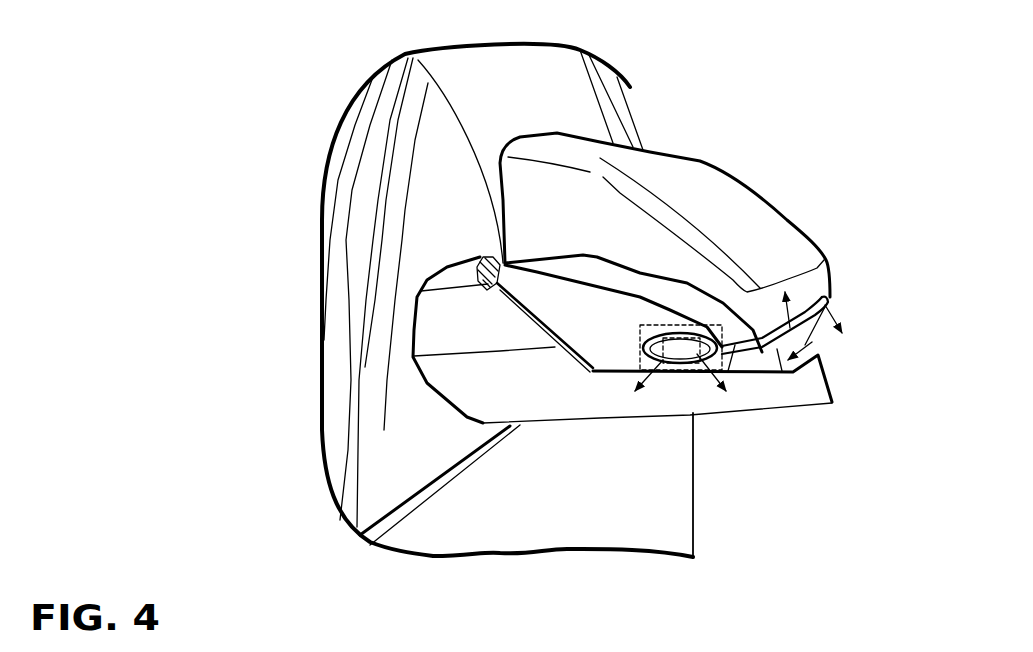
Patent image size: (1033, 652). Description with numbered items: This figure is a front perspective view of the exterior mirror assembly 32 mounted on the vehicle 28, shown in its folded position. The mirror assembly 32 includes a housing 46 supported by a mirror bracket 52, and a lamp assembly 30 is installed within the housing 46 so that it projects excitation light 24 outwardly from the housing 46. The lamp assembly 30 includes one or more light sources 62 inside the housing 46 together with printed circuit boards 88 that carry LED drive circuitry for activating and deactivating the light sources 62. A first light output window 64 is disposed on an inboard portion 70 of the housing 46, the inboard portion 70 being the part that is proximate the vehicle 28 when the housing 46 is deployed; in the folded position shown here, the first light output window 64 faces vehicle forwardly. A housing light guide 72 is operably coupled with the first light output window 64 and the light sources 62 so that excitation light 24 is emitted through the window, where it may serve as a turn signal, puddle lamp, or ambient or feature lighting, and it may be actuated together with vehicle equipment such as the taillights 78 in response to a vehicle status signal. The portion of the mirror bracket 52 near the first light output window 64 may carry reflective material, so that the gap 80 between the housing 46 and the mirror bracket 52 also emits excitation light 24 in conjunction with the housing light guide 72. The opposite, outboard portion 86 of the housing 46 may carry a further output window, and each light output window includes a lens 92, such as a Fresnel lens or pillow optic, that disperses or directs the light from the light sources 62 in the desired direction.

The excitation light 24 is at (644, 465).
The vehicle 28 is at (605, 53).
The lamp assembly 30 is at (729, 364).
The mirror assembly 32 is at (698, 157).
The housing 46 is at (728, 210).
The mirror bracket 52 is at (417, 410).
The light sources 62 is at (615, 483).
The first light output window 64 is at (699, 366).
The inboard portion 70 is at (655, 305).
The housing light guide 72 is at (817, 322).
The taillights 78 is at (487, 256).
The gap 80 is at (507, 315).
The outboard portion 86 is at (500, 163).
The printed circuit boards 88 is at (531, 473).
The lens 92 is at (685, 352).